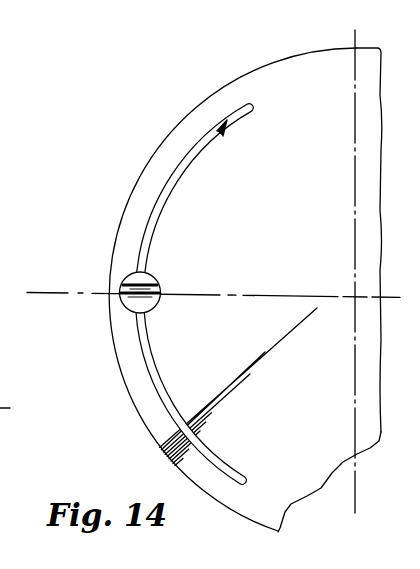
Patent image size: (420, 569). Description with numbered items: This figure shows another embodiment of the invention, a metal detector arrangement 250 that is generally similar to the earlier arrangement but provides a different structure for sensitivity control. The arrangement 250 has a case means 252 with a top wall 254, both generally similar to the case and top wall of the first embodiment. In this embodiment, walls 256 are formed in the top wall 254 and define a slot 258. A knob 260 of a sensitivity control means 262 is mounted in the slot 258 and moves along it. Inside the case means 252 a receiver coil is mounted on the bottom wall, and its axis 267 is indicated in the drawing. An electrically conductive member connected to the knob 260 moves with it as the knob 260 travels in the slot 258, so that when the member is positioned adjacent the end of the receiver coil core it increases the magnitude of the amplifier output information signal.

The metal detector arrangement 250 is at (163, 98).
The case means 252 is at (165, 137).
The top wall 254 is at (318, 412).
The walls 256 is at (184, 166).
The slot 258 is at (228, 124).
The knob 260 is at (232, 258).
The sensitivity control means 262 is at (153, 309).
The axis 267 is at (74, 292).